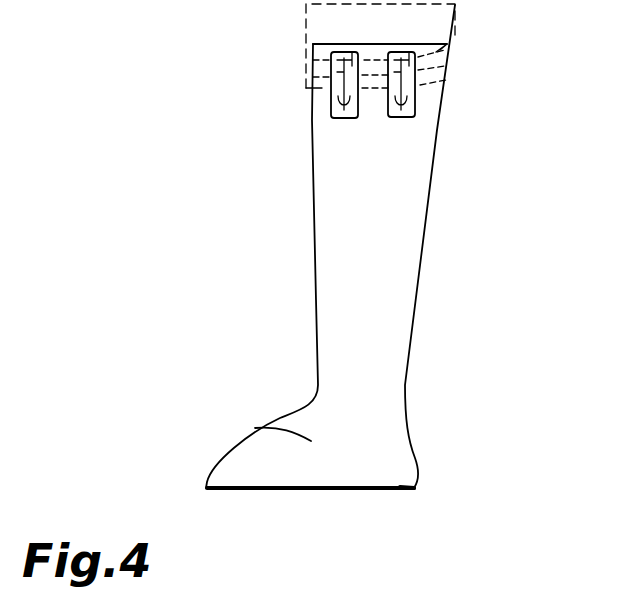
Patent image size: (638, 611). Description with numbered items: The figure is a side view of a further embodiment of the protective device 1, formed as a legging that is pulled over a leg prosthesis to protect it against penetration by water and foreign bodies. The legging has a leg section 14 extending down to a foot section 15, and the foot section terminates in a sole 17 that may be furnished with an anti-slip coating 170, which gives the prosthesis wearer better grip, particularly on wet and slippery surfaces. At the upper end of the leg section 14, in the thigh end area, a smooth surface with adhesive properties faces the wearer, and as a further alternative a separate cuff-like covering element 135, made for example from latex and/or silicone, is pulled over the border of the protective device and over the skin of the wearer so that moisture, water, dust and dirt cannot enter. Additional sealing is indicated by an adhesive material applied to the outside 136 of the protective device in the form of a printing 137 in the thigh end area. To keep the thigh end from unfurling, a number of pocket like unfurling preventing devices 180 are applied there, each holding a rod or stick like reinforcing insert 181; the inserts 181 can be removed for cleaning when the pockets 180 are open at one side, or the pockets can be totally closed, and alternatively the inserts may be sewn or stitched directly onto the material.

The protective device 1 is at (337, 258).
The leg section 14 is at (283, 198).
The foot section 15 is at (233, 428).
The sole 17 is at (222, 490).
The anti-slip coating 170 is at (410, 490).
The cuff-like covering element 135 is at (435, 25).
The outside 136 is at (438, 50).
The printing 137 is at (432, 72).
The pocket like unfurling preventing device 180 is at (414, 100).
The reinforcing insert 181 is at (413, 110).